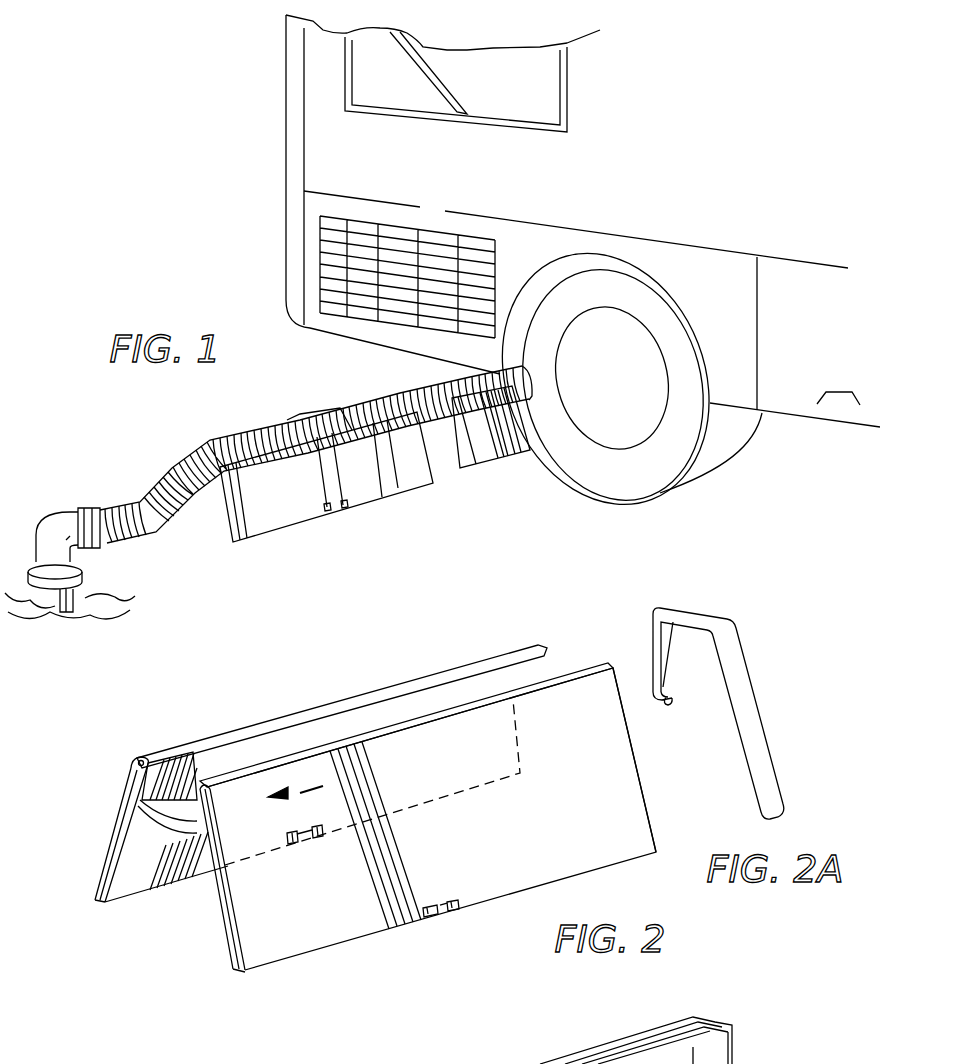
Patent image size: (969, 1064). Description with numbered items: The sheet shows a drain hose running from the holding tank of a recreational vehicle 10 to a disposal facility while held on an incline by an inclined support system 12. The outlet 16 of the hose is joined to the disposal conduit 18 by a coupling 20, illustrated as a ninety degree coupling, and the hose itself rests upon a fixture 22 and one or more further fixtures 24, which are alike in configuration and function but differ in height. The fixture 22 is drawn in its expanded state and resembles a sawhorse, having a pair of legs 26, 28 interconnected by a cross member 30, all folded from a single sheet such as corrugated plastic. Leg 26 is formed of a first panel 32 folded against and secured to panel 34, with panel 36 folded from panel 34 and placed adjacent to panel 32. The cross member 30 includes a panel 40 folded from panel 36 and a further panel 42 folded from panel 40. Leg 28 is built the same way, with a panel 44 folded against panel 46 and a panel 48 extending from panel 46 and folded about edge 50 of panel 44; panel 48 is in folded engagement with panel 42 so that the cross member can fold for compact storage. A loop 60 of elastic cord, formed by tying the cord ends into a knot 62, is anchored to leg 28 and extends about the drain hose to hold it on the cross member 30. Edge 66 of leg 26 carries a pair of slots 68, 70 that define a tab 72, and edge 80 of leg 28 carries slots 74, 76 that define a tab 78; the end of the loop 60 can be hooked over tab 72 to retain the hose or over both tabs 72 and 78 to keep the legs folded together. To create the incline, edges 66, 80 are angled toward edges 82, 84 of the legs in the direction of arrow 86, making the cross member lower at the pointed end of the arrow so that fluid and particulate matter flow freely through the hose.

In FIG. 1, the recreational vehicle 10 is at (286, 187).
In FIG. 1, the inclined support system 12 is at (375, 502).
In FIG. 1, the outlet 16 is at (88, 508).
In FIG. 1, the conduit 18 is at (80, 590).
In FIG. 1, the coupling 20 is at (52, 522).
In FIG. 1, the fixture 22 is at (282, 510).
In FIG. 2, the fixture 22 is at (346, 822).
In FIG. 1, the further fixture 24 is at (480, 458).
In FIG. 2, the leg 26 is at (409, 822).
In FIG. 2, the leg 28 is at (132, 850).
In FIG. 2, the cross member 30 is at (166, 842).
In FIG. 2, the first panel 32 is at (228, 945).
In FIG. 2, the panel 34 is at (300, 935).
In FIG. 2, the panel 36 is at (186, 793).
In FIG. 2, the panel 40 is at (204, 870).
In FIG. 2, the further panel 42 is at (163, 830).
In FIG. 2, the panel 44 is at (118, 862).
In FIG. 2, the panel 46 is at (118, 825).
In FIG. 2, the panel 48 is at (140, 757).
In FIG. 2, the edge 50 is at (128, 763).
In FIG. 2A, the loop 60 is at (766, 727).
In FIG. 2A, the knot 62 is at (670, 700).
In FIG. 2, the edge 66 is at (592, 872).
In FIG. 2, the slot 68 is at (455, 907).
In FIG. 2, the slot 70 is at (430, 920).
In FIG. 1, the tab 72 is at (340, 510).
In FIG. 2, the tab 72 is at (447, 914).
In FIG. 2, the slot 74 is at (290, 846).
In FIG. 2, the slot 76 is at (325, 838).
In FIG. 2, the tab 78 is at (303, 840).
In FIG. 2, the edge 80 is at (125, 895).
In FIG. 2, the edge 82 is at (578, 668).
In FIG. 2, the edge 84 is at (432, 672).
In FIG. 2, the arrow 86 is at (300, 800).